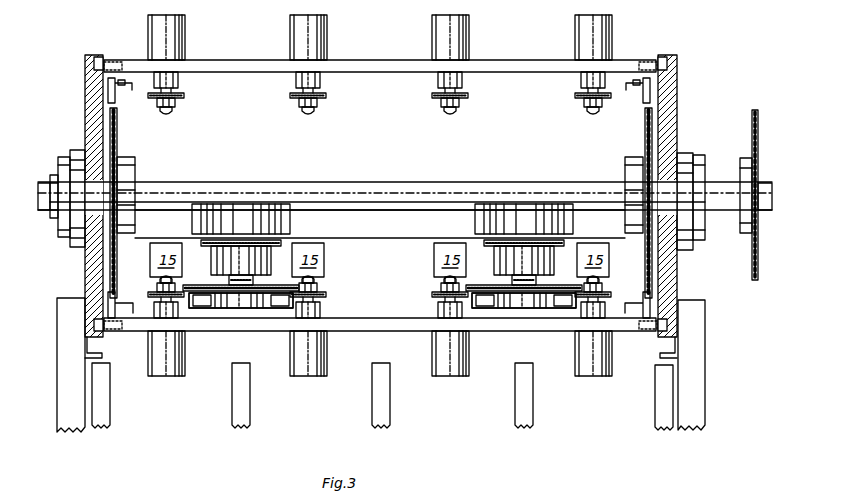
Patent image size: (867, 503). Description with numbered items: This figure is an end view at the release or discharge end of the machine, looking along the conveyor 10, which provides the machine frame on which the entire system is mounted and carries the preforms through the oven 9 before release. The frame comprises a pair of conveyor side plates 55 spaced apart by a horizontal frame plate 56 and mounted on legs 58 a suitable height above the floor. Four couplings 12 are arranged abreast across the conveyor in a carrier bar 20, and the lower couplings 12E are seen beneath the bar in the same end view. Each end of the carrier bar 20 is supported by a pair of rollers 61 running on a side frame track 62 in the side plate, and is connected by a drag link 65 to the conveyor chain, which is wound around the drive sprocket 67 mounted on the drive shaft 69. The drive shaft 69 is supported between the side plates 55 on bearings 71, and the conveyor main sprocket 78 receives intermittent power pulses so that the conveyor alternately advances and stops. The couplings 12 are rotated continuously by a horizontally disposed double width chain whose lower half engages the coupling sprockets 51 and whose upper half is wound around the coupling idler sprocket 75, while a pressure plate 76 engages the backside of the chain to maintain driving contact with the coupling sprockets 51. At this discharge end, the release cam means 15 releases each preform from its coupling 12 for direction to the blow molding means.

The oven 9 is at (110, 426).
The conveyor assembly 10 is at (80, 76).
The coupling 12 is at (178, 45).
The lower cylinder 12E is at (186, 355).
The release cam means 15 is at (379, 263).
The carrier bar 20 is at (534, 60).
The coupling sprocket 51 is at (322, 96).
The conveyor side plate 55 is at (85, 102).
The horizontal frame plate 56 is at (378, 238).
The leg 58 is at (67, 432).
The roller 61 is at (98, 57).
The side frame track 62 is at (90, 63).
The drag link 65 is at (116, 96).
The drive sprocket 67 is at (117, 133).
The drive shaft 69 is at (333, 182).
The bearing 71 is at (62, 222).
The coupling idler sprocket 75 is at (272, 286).
The pressure plate 76 is at (200, 303).
The conveyor main sprocket 78 is at (752, 268).